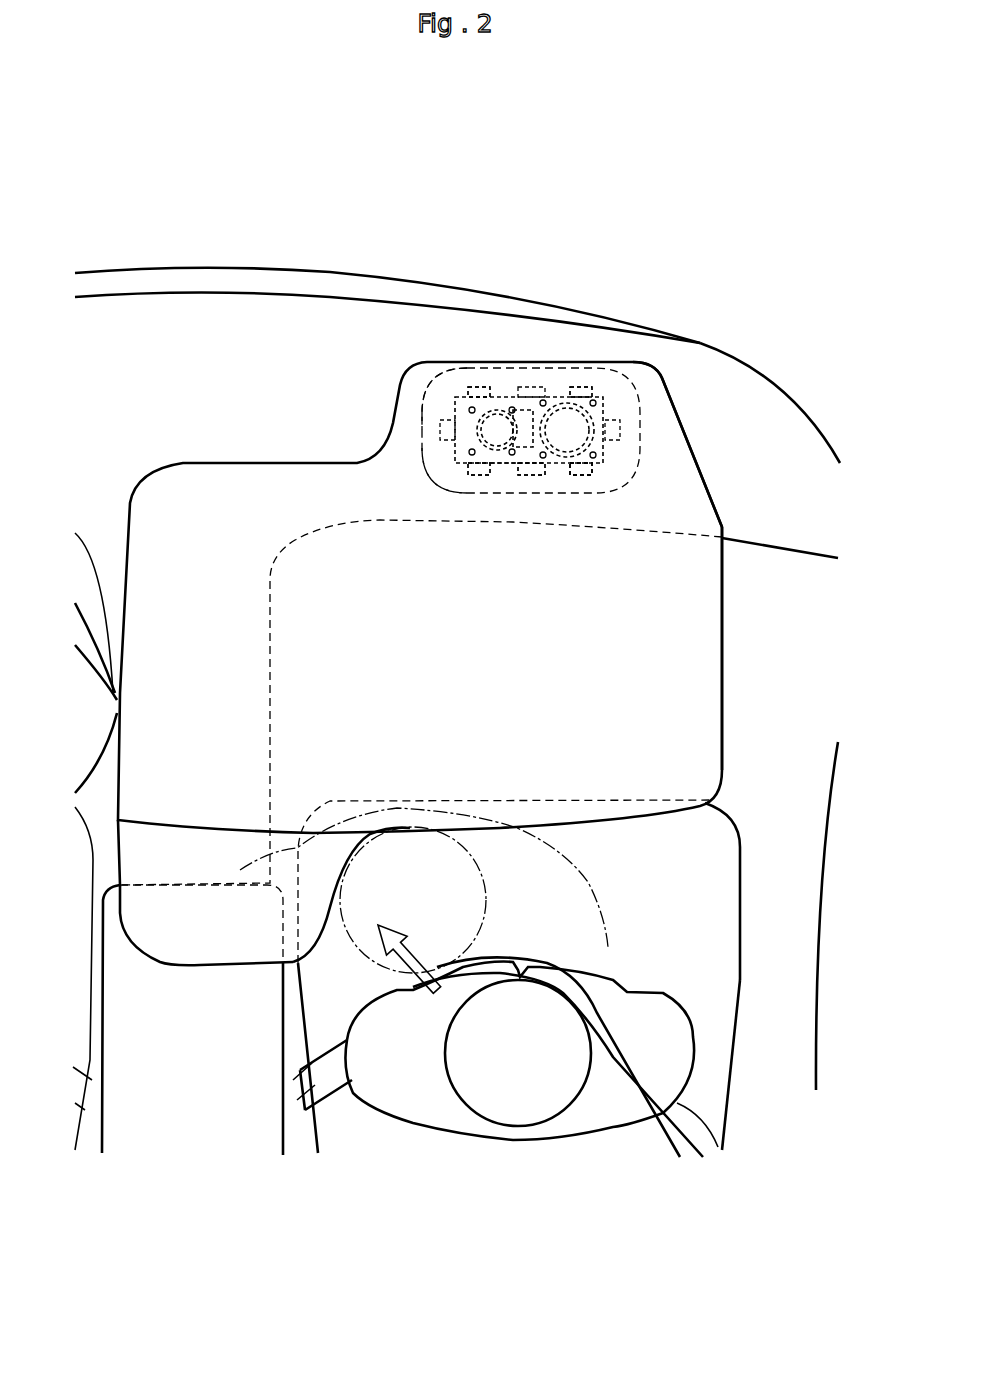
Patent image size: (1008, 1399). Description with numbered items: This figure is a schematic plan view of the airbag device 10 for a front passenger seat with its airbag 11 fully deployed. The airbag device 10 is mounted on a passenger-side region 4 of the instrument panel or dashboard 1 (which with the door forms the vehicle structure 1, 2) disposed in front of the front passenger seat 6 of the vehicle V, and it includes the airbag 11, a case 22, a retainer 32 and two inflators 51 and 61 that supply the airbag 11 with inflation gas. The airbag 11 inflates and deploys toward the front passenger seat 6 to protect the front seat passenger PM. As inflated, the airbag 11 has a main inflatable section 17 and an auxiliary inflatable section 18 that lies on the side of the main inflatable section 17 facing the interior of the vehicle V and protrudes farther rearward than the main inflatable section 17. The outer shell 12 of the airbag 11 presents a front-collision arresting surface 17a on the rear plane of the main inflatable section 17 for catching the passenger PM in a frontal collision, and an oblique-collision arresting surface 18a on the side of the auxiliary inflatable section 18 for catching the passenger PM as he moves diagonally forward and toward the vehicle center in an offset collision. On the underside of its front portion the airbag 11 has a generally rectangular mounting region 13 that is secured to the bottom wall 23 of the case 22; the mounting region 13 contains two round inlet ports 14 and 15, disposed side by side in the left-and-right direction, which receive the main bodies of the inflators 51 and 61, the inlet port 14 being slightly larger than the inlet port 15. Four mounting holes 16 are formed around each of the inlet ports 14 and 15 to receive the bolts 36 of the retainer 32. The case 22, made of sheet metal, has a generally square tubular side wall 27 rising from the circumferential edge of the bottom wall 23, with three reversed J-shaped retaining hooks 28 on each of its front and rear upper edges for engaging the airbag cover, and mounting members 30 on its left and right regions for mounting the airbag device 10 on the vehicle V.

The instrument panel or dashboard 1 is at (145, 330).
The vehicle door 2 is at (387, 251).
The passenger-side region 4 is at (394, 341).
The front passenger seat 6 is at (752, 1123).
The airbag device 10 is at (677, 368).
The airbag 11 is at (737, 613).
The outer shell 12 is at (722, 515).
The mounting region 13 is at (637, 400).
The inlet port 14 is at (603, 447).
The inlet port 15 is at (493, 400).
The mounting holes 16 is at (460, 400).
The main inflatable section 17 is at (700, 712).
The front-collision arresting surface 17a is at (500, 828).
The auxiliary inflatable section 18 is at (195, 948).
The oblique-collision arresting surface 18a is at (325, 932).
The case 22 is at (443, 395).
The bottom wall 23 is at (427, 470).
The side wall 27 is at (497, 480).
The retaining hooks 28 is at (473, 467).
The mounting members 30 is at (440, 428).
The retainer 32 is at (540, 400).
The bolts 36 is at (487, 352).
The inflator 51 is at (580, 475).
The inflator 61 is at (427, 400).
The vehicle V is at (778, 322).
The front seat passenger PM is at (615, 910).